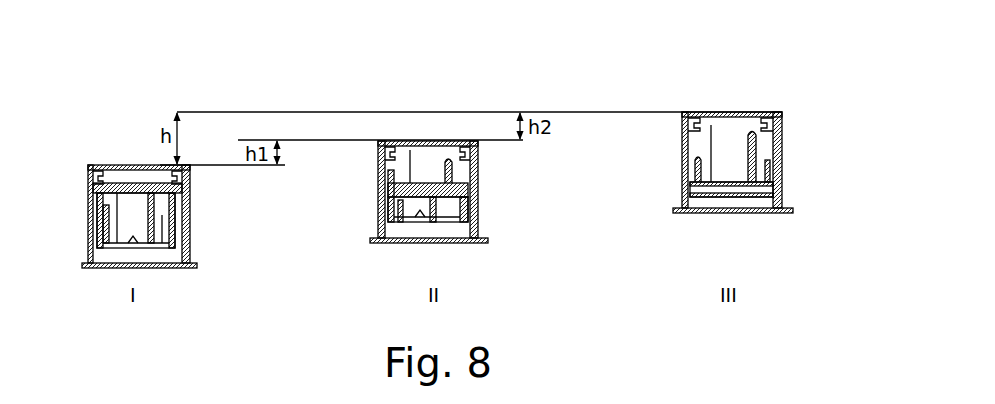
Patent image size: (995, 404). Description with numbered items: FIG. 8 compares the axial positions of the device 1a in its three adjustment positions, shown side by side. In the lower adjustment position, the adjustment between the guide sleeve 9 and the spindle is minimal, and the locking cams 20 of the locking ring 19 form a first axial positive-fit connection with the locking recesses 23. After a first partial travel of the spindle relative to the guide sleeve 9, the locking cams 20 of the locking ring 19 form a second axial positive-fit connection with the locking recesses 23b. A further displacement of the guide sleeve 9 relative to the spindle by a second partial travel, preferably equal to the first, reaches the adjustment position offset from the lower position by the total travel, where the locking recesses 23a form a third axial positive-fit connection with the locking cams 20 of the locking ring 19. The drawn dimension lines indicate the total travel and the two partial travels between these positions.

The device 1a is at (130, 82).
The guide sleeve 9 is at (138, 172).
The locking ring 19 is at (125, 200).
The locking cams 20 is at (92, 188).
The locking recesses 23 is at (105, 168).
The locking recesses 23a is at (686, 190).
The locking recesses 23b is at (380, 175).